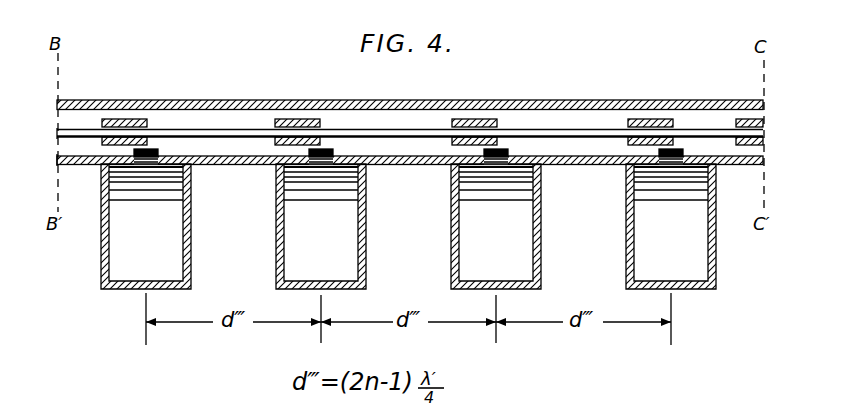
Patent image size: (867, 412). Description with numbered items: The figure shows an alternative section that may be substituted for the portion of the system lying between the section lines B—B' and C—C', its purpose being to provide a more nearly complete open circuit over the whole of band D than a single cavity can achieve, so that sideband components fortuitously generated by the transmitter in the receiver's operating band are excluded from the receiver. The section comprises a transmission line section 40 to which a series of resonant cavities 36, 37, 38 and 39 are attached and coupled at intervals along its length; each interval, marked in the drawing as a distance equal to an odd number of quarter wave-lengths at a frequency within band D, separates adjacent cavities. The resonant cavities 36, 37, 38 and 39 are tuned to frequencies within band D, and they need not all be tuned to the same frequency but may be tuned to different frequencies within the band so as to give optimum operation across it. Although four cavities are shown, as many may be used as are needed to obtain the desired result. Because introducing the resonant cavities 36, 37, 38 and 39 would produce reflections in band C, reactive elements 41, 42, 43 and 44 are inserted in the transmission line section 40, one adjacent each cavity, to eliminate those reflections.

The resonant cavity 36 is at (191, 217).
The resonant cavity 37 is at (366, 213).
The resonant cavity 38 is at (541, 205).
The resonant cavity 39 is at (716, 232).
The transmission line section 40 is at (600, 100).
The reactive element 41 is at (146, 121).
The reactive element 42 is at (319, 121).
The reactive element 43 is at (496, 121).
The reactive element 44 is at (672, 121).